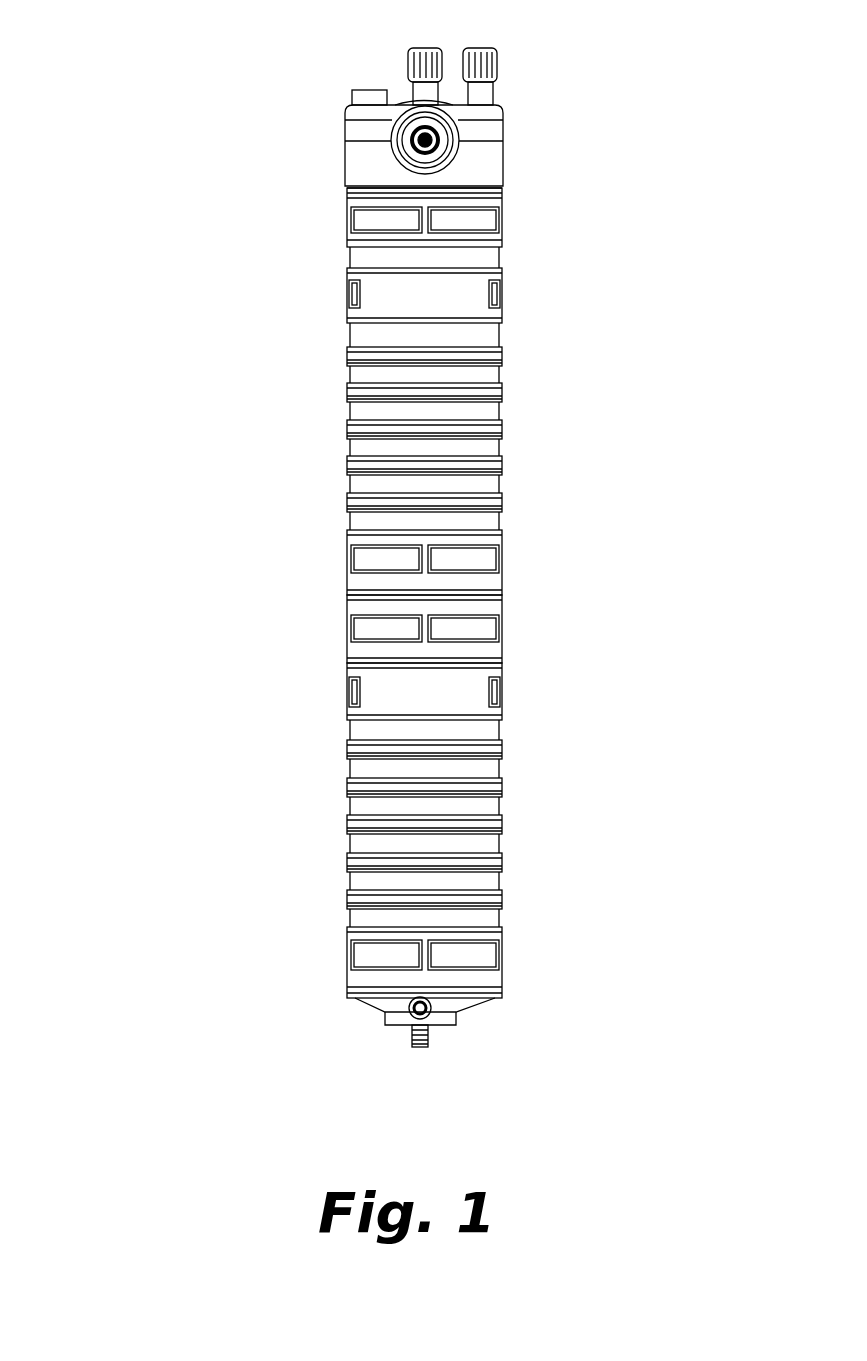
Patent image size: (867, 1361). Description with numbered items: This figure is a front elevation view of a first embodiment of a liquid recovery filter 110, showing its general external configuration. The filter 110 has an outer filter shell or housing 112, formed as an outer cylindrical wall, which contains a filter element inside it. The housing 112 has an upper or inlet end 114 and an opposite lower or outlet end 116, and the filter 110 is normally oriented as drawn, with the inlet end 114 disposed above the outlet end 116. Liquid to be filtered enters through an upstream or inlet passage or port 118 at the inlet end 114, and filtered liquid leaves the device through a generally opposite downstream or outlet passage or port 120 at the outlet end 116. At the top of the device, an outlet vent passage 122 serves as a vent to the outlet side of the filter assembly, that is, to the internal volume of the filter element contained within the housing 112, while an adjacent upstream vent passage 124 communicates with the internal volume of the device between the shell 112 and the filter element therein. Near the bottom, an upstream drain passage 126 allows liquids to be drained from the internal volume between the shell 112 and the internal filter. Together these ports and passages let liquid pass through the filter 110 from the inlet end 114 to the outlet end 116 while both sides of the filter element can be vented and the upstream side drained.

The liquid recovery filter 110 is at (218, 660).
The outer filter shell or housing 112 is at (347, 518).
The upper or inlet end 114 is at (346, 129).
The lower or outlet end 116 is at (345, 978).
The upstream or inlet passage or port 118 is at (440, 143).
The downstream or outlet passage or port 120 is at (428, 1040).
The outlet vent passage 122 is at (407, 68).
The upstream vent passage 124 is at (497, 62).
The upstream drain passage 126 is at (432, 1000).